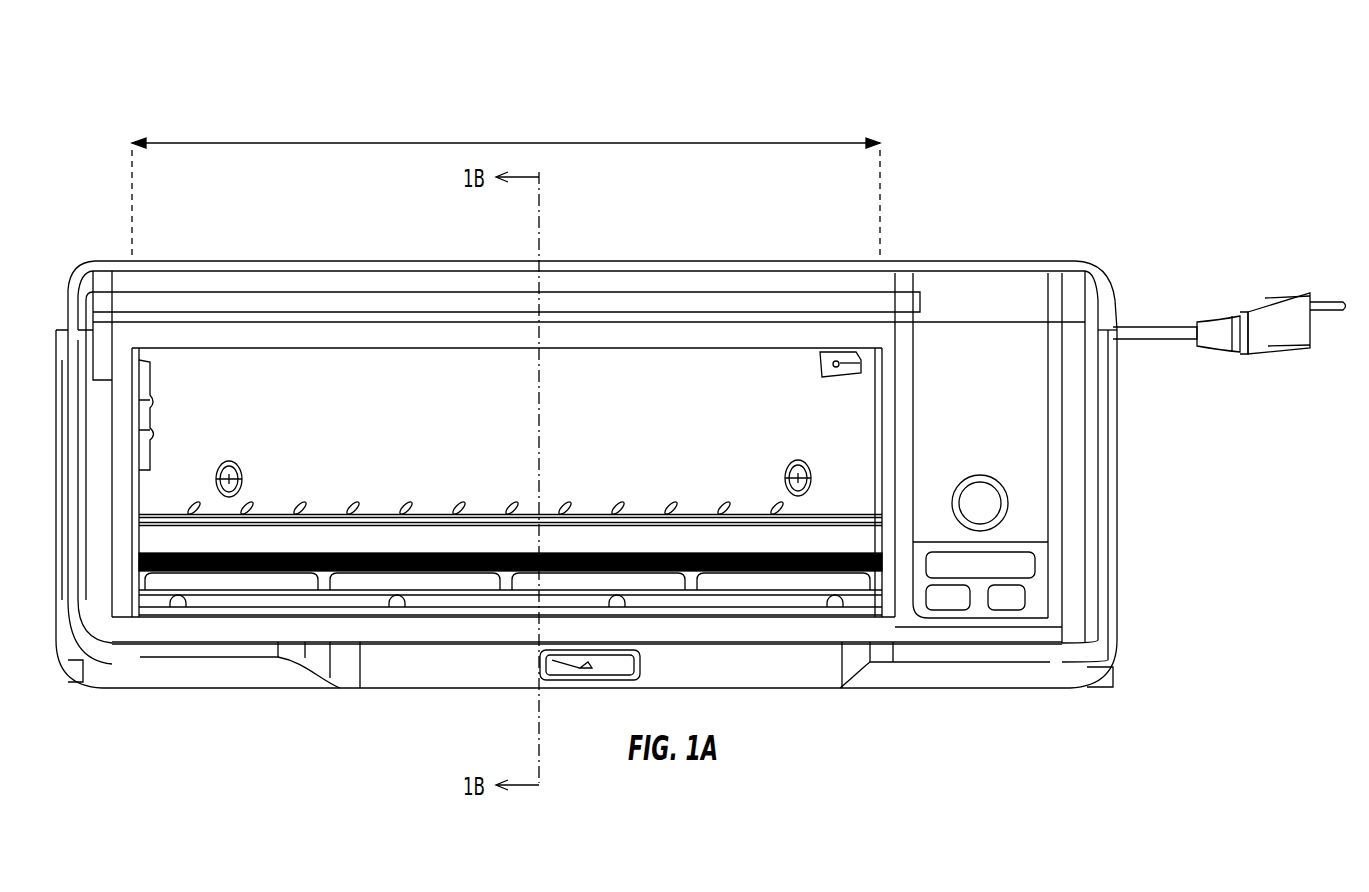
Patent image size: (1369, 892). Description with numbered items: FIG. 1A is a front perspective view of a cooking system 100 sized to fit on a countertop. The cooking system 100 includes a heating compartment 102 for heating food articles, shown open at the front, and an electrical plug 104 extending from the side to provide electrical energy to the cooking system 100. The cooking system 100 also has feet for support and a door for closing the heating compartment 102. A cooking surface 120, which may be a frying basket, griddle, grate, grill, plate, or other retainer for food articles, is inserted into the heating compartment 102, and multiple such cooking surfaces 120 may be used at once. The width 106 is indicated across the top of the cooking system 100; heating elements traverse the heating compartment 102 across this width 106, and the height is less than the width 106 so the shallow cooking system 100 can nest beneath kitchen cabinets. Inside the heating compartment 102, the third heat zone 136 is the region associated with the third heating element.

The cooking system 100 is at (1064, 134).
The heating compartment 102 is at (713, 407).
The electrical plug 104 is at (1254, 314).
The width 106 is at (724, 143).
The cooking surface 120 is at (818, 512).
The third heat zone 136 is at (512, 428).